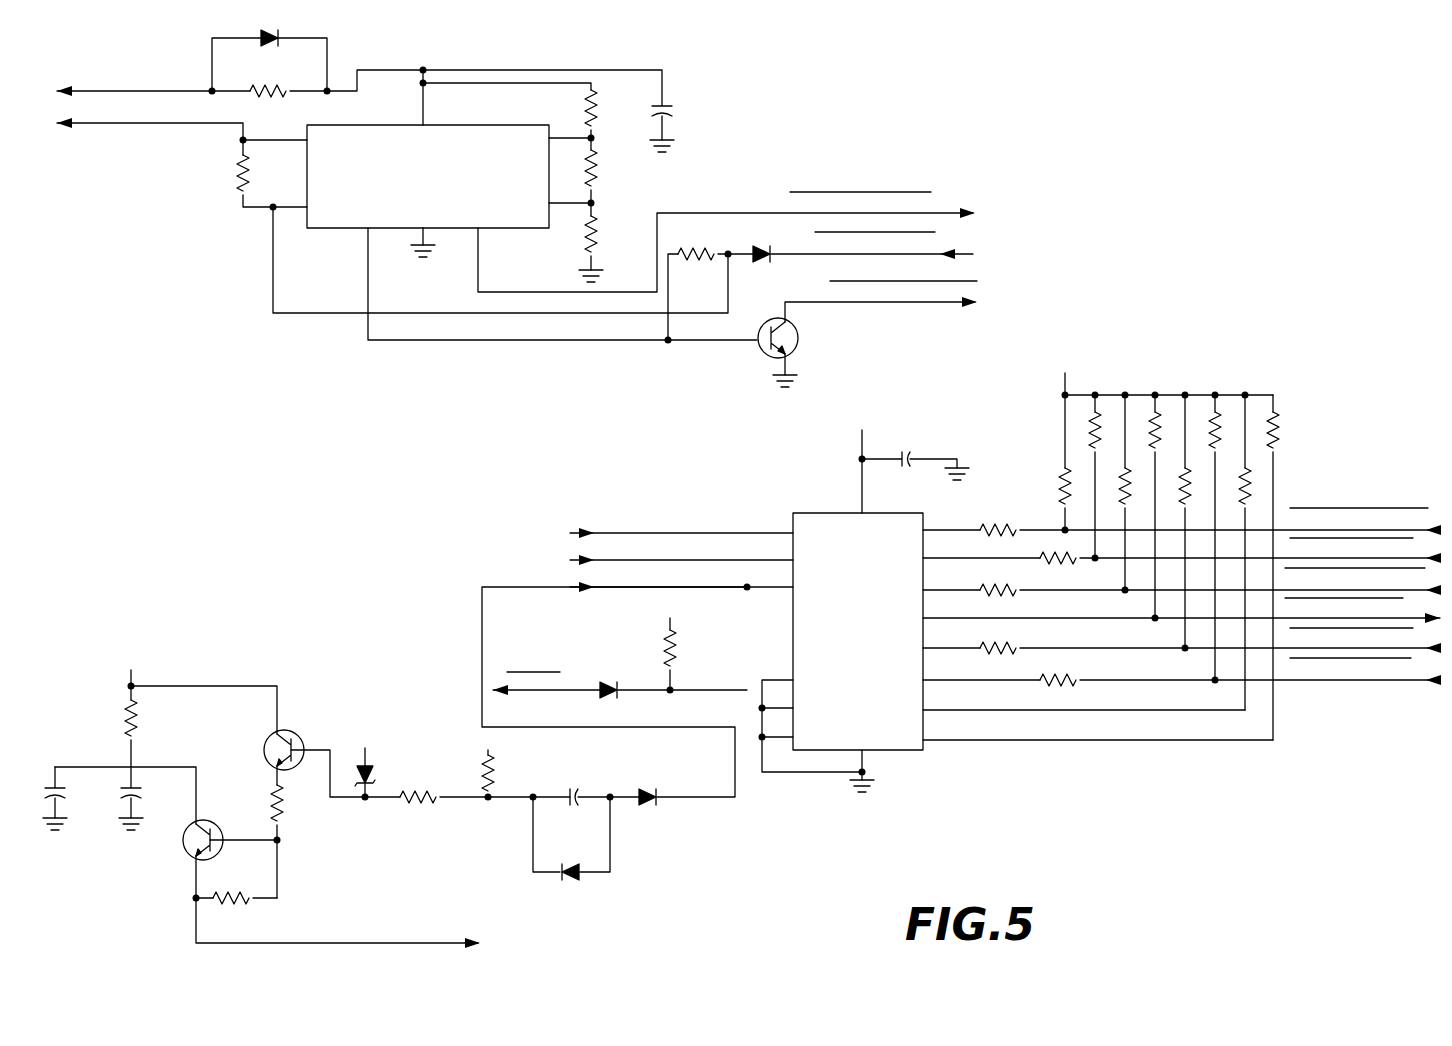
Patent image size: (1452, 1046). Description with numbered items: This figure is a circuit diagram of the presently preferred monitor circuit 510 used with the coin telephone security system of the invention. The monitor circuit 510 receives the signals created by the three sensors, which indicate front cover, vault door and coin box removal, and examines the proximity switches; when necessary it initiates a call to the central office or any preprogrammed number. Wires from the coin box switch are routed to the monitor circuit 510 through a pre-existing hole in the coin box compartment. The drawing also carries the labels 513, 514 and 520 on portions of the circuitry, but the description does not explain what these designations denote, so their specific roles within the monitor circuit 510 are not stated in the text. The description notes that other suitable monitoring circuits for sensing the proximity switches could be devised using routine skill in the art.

The monitor circuit 510 is at (160, 382).
The I/O expander interface circuit 513 is at (735, 468).
The voltage monitor circuit 514 is at (212, 226).
The I/O expander U19 PCF8574 520 is at (882, 567).